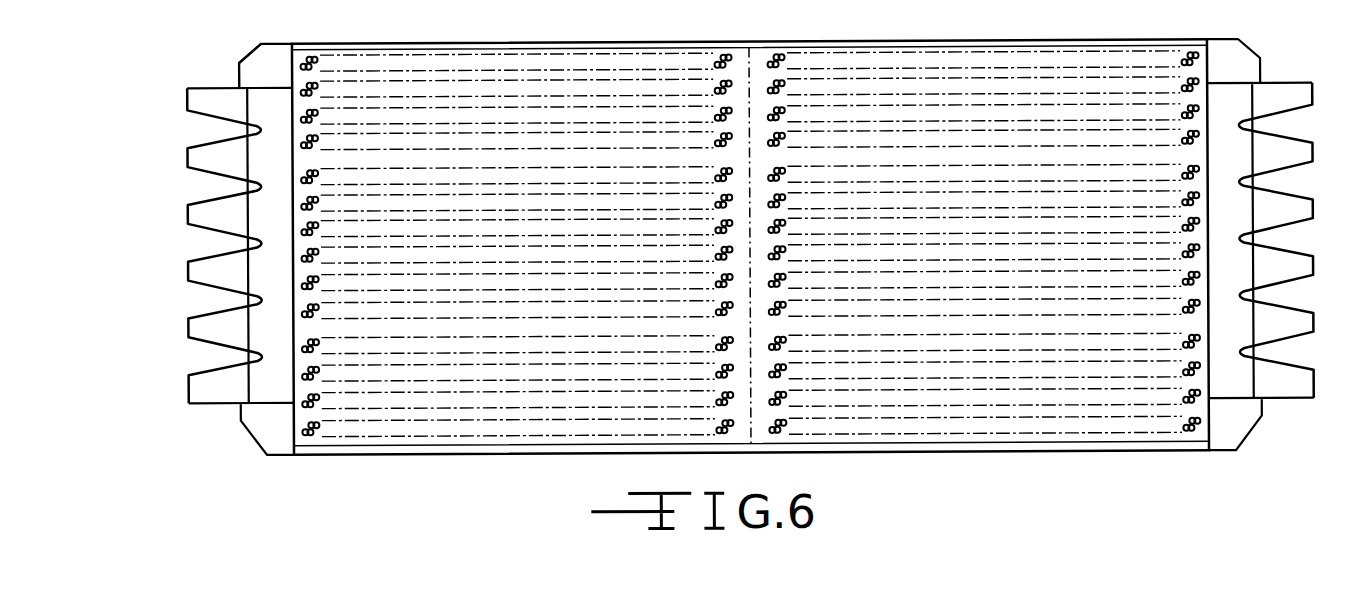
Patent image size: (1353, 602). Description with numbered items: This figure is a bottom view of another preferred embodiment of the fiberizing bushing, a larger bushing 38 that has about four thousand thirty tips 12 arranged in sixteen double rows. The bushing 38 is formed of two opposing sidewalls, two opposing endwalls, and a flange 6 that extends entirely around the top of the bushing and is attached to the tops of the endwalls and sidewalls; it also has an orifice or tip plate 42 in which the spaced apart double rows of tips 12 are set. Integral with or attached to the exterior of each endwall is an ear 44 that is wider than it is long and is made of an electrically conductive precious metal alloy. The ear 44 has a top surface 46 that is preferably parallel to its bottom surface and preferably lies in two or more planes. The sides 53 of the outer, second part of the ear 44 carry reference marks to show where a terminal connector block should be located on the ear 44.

The bushing 38 is at (914, 38).
The tip plate 42 is at (412, 416).
The tips 12 is at (1197, 425).
The top surface 46 is at (275, 384).
The flange 6 is at (240, 418).
The ear 44 is at (203, 385).
The sides 53 is at (1277, 400).